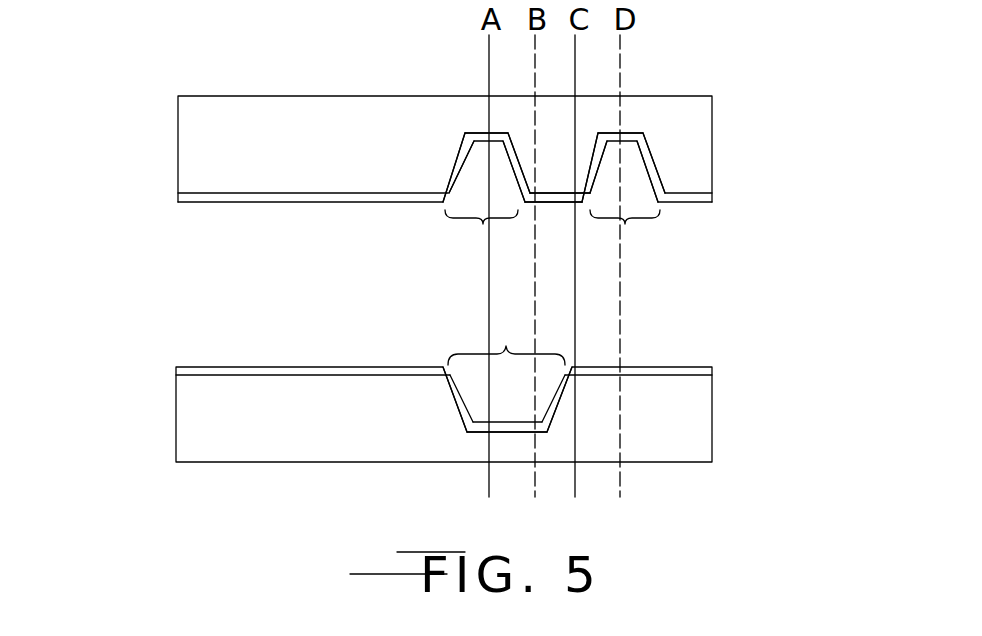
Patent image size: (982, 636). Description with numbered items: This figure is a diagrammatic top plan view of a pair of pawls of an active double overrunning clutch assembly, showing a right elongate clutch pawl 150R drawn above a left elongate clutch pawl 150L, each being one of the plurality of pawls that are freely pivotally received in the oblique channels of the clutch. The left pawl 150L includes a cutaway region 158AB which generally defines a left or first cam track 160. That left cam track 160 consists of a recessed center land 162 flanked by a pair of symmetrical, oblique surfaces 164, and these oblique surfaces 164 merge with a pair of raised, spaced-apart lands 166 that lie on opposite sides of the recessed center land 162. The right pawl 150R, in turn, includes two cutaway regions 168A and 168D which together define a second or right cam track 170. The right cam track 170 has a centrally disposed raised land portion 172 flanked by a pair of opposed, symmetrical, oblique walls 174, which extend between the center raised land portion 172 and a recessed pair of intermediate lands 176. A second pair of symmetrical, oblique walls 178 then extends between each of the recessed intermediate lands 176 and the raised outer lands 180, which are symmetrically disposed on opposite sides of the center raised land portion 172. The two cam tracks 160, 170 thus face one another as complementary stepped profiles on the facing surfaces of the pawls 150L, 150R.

The right elongate clutch pawl 150R is at (206, 155).
The left elongate clutch pawl 150L is at (202, 415).
The cutaway region 158AB is at (505, 347).
The left cam track 160 is at (700, 326).
The recessed center land 162 is at (507, 423).
The oblique surfaces 164 is at (556, 396).
The raised spaced-apart lands 166 is at (293, 367).
The cutaway region 168A is at (486, 226).
The cutaway region 168D is at (625, 224).
The right cam track 170 is at (645, 242).
The raised land portion 172 is at (548, 200).
The oblique walls 174 is at (513, 173).
The recessed intermediate lands 176 is at (612, 140).
The oblique walls 178 is at (455, 160).
The raised outer lands 180 is at (303, 197).